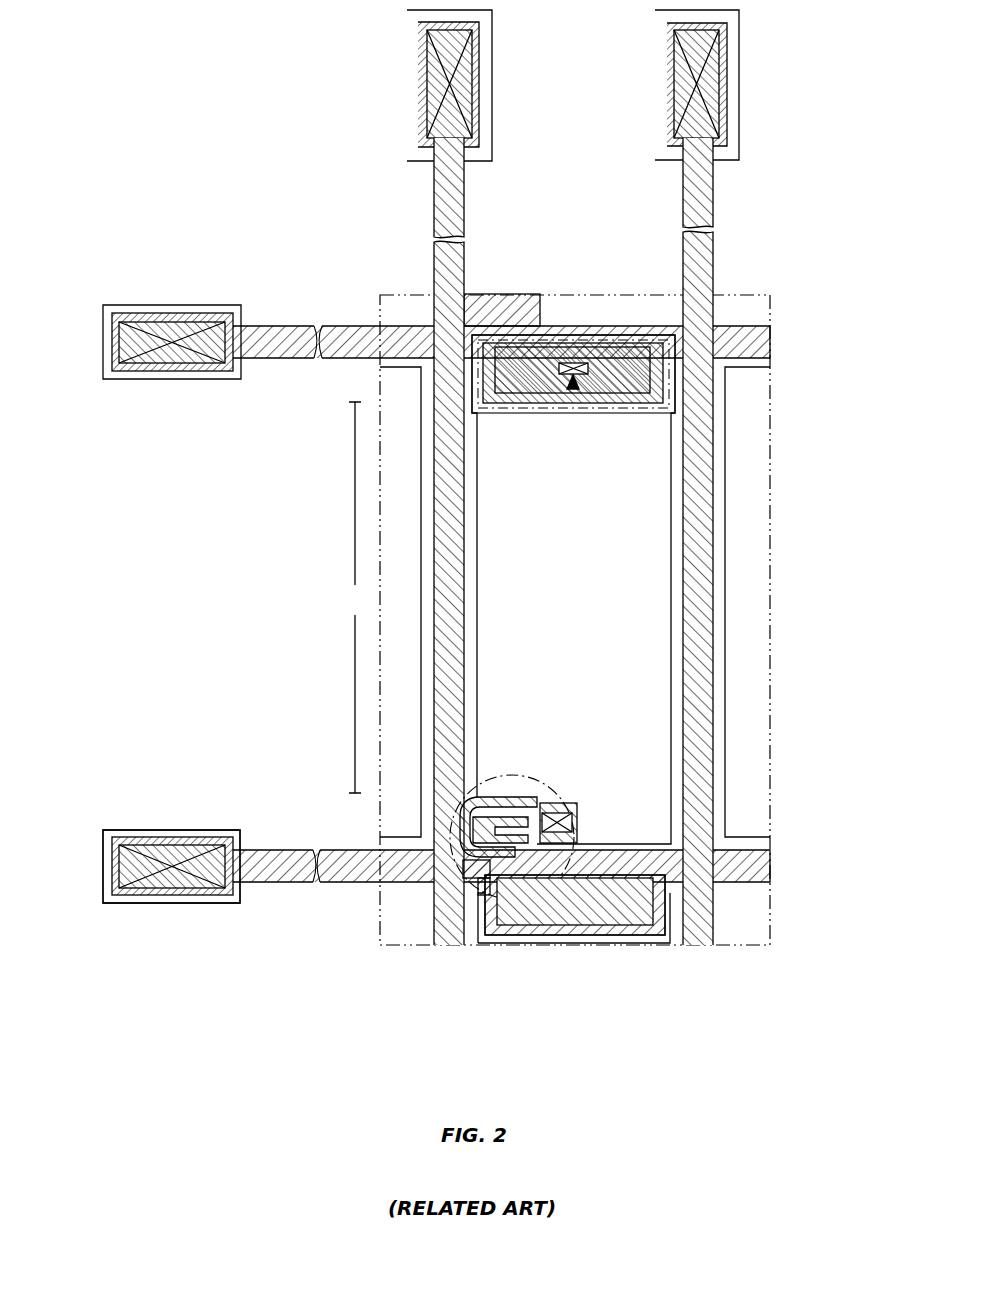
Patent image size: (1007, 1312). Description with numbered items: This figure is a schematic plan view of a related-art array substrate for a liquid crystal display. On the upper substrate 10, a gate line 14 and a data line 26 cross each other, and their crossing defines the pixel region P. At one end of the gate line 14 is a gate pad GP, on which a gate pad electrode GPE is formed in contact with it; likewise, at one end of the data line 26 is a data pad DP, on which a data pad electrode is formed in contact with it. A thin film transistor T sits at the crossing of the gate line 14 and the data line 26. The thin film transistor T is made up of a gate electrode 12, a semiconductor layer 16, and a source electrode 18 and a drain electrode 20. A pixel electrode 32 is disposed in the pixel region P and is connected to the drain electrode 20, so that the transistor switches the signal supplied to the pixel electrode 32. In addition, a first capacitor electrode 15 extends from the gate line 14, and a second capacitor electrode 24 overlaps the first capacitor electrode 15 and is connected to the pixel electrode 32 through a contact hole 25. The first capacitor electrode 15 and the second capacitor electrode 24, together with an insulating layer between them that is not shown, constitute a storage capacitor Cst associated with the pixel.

The upper substrate 10 is at (753, 992).
The gate electrode 12 is at (524, 812).
The gate line 14 is at (752, 342).
The first capacitor electrode 15 is at (612, 403).
The semiconductor layer 16 is at (548, 800).
The source electrode 18 is at (470, 885).
The drain electrode 20 is at (497, 815).
The second capacitor electrode 24 is at (573, 389).
The contact hole 25 is at (585, 395).
The data line 26 is at (693, 927).
The pixel electrode 32 is at (660, 590).
The thin film transistor T is at (557, 910).
The pixel region P is at (355, 597).
The storage capacitor Cst is at (655, 408).
The data pad DP is at (492, 40).
The gate pad GP is at (150, 895).
The gate pad electrode GPE is at (228, 903).